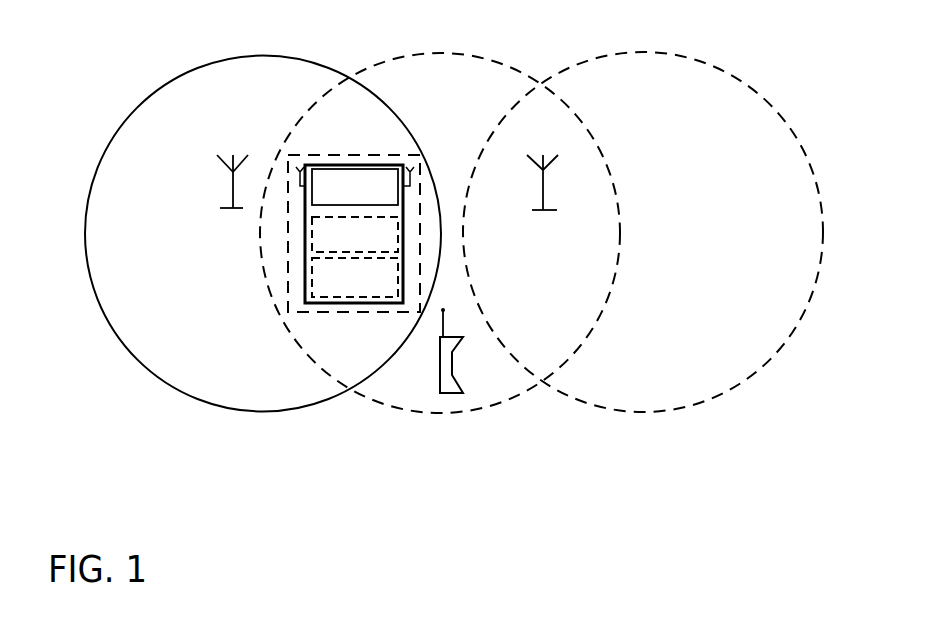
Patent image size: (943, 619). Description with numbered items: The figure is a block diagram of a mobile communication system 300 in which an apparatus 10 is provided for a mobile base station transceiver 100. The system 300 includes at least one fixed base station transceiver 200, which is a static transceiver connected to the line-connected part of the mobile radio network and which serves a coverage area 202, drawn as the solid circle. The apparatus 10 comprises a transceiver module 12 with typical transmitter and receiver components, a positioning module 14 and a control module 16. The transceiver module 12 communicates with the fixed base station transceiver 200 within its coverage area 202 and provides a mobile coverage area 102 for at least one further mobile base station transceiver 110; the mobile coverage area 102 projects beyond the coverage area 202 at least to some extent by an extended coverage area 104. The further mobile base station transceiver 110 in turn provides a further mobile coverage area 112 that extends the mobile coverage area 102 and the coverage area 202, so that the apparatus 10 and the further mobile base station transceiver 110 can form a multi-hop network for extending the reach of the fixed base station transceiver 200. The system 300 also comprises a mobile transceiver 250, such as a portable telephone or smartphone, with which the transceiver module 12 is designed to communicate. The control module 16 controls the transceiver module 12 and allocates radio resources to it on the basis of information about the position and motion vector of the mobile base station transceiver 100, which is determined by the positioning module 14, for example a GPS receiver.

The apparatus 10 is at (311, 276).
The transceiver module 12 is at (312, 199).
The positioning module 14 is at (312, 229).
The control module 16 is at (312, 284).
The mobile base station transceiver 100 is at (314, 307).
The mobile coverage area 102 is at (473, 408).
The extended coverage area 104 is at (515, 378).
The further mobile base station transceiver 110 is at (548, 210).
The further mobile coverage area 112 is at (677, 408).
The fixed base station transceiver 200 is at (228, 208).
The coverage area 202 is at (232, 408).
The mobile transceiver 250 is at (445, 382).
The mobile communication system 300 is at (447, 466).